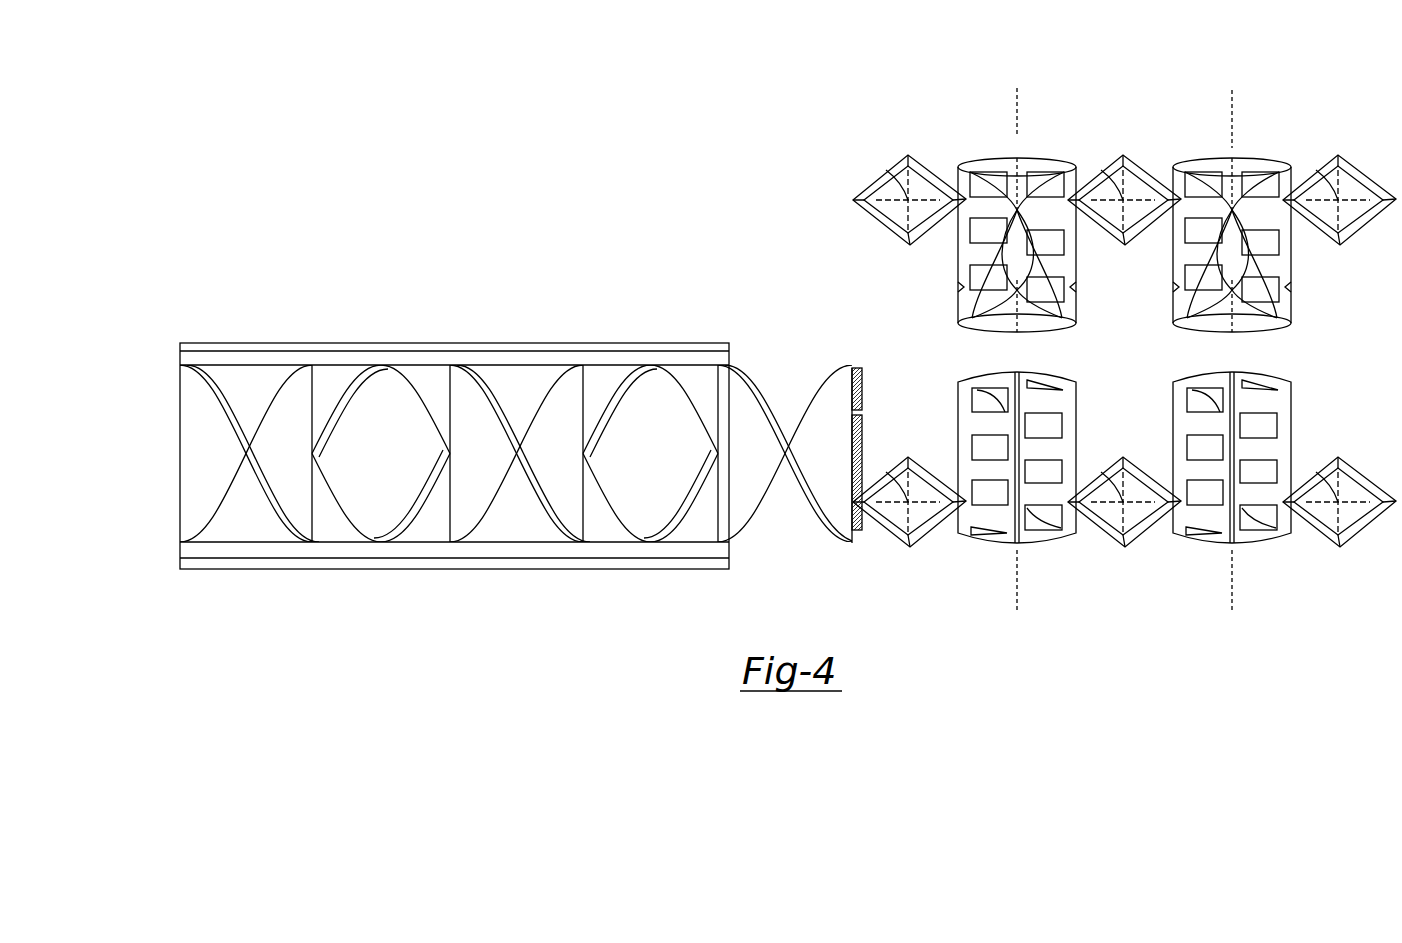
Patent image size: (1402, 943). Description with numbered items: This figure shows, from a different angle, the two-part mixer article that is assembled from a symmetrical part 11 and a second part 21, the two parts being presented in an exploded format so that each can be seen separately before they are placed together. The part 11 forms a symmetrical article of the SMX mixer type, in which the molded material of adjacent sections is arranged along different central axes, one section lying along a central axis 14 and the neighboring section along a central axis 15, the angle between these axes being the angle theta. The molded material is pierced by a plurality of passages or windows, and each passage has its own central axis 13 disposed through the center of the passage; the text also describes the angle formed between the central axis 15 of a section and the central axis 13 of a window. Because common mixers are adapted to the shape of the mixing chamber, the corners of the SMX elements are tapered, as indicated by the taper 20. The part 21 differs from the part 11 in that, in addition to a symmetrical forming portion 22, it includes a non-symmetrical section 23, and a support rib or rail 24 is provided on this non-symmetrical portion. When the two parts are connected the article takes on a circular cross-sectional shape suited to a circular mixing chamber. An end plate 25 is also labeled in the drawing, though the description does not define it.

The symmetrical part 11 is at (866, 173).
The central axis of passage 13 is at (1255, 548).
The central axis of section 14 is at (1104, 362).
The central axis of section 15 is at (1020, 118).
The taper of the corners 20 is at (968, 283).
The part forming a symmetrical article with non-symmetrical section 21 is at (1340, 460).
The symmetrical forming portion 22 is at (1090, 518).
The non-symmetrical section 23 is at (604, 517).
The support rib or rail 24 is at (374, 343).
The end plate 25 is at (866, 528).